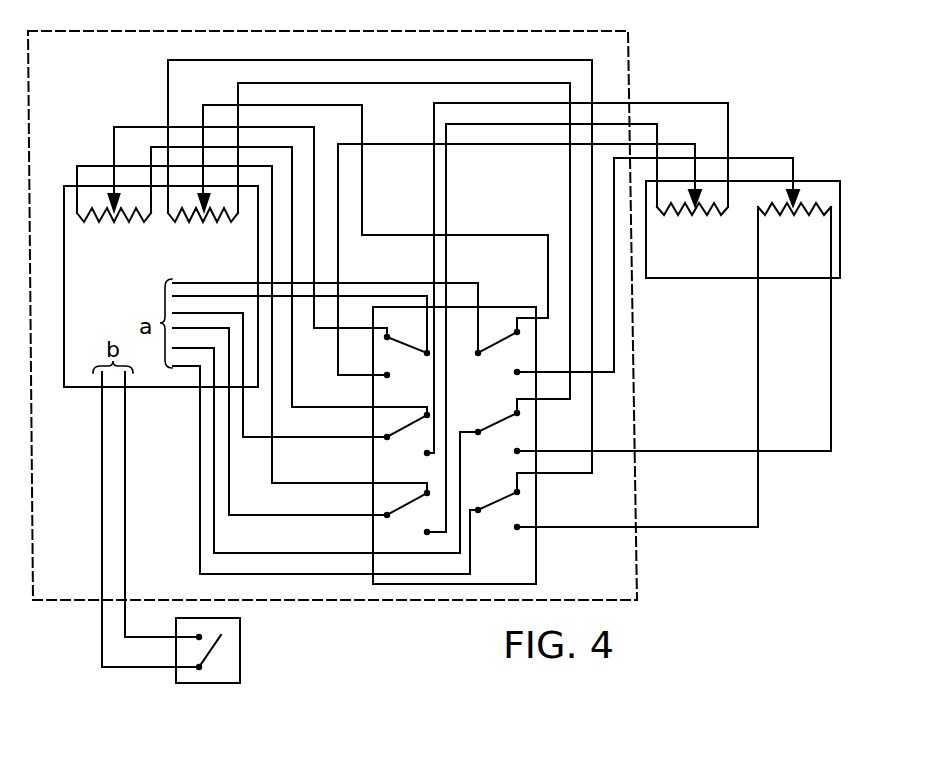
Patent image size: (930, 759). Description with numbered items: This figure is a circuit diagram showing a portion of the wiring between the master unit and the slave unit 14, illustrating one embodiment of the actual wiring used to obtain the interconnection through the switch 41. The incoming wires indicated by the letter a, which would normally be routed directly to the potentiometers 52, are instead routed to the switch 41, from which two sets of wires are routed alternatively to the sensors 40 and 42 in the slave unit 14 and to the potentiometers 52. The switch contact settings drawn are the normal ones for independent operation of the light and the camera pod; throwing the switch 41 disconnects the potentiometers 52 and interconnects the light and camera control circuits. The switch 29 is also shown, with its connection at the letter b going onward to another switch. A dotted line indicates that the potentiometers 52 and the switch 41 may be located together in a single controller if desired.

The slave unit 14 is at (737, 278).
The switch 29 is at (242, 649).
The sensor 40 is at (700, 212).
The switch 41 is at (487, 305).
The sensor 42 is at (775, 212).
The potentiometers 52 is at (118, 218).